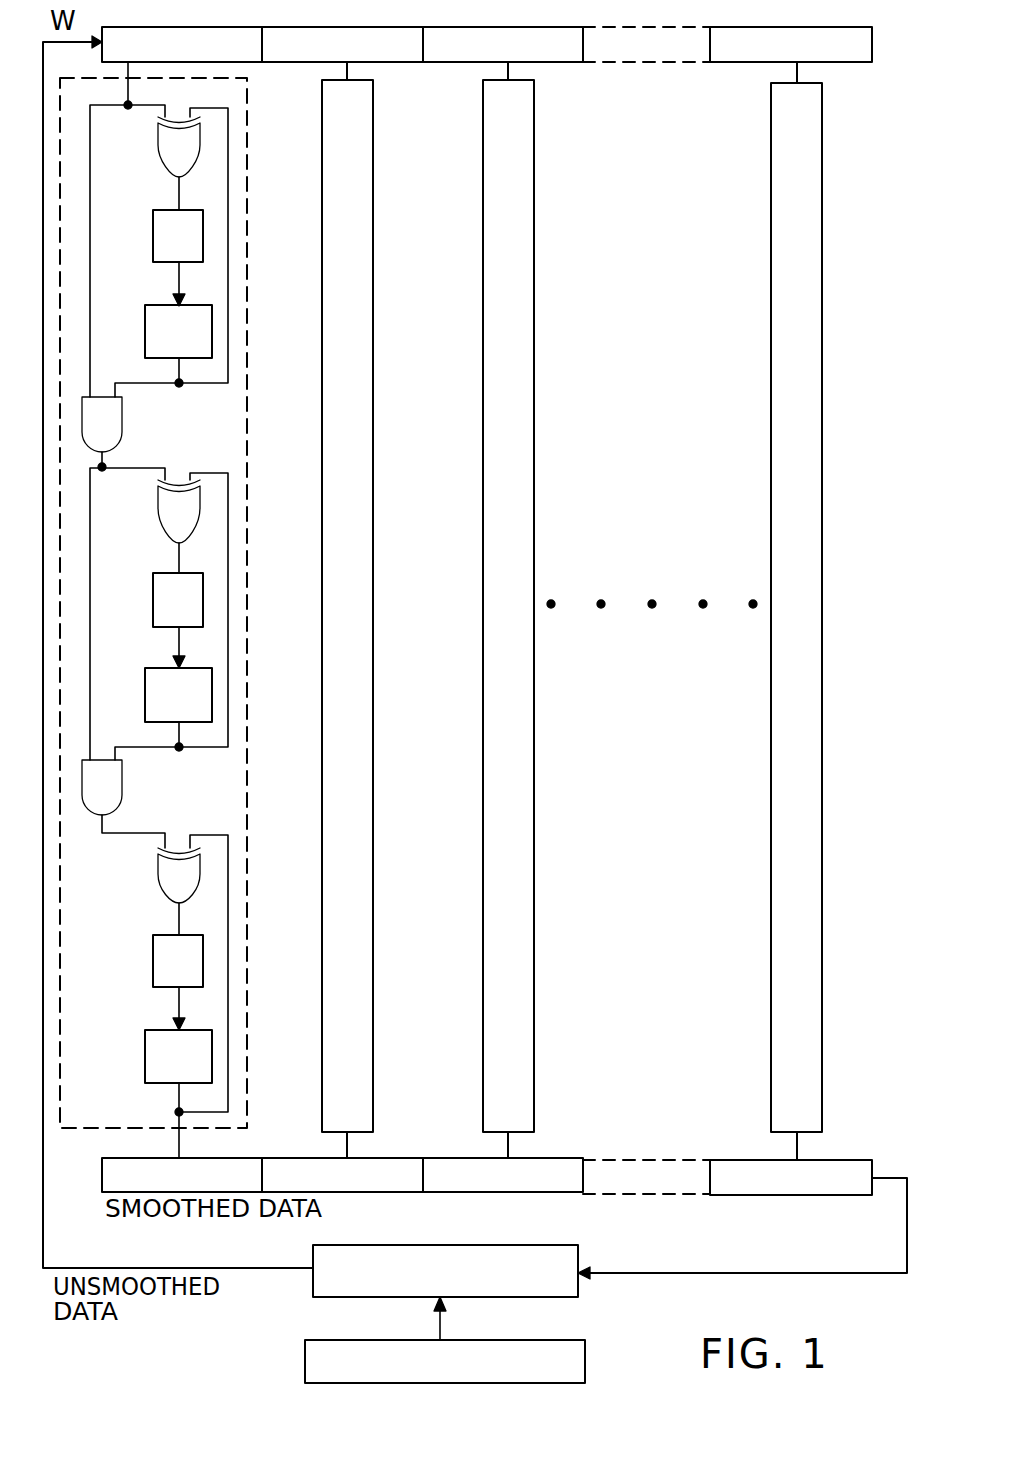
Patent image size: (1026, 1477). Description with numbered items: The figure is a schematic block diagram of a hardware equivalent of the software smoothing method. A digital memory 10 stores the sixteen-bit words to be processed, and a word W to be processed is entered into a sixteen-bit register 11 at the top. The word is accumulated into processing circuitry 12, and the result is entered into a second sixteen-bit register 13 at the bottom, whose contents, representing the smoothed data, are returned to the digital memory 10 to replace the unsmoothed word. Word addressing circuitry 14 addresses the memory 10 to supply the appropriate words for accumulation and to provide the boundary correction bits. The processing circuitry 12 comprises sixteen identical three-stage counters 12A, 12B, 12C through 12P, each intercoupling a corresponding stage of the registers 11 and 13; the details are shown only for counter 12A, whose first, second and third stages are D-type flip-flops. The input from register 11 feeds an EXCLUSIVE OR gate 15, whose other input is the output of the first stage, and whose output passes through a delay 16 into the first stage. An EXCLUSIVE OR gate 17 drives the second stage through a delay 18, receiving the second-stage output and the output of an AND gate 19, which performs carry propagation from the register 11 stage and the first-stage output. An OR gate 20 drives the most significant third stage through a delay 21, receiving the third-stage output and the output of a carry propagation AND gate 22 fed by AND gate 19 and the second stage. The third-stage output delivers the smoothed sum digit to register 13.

The digital memory 10 is at (578, 1250).
The 16 bit register 11 is at (728, 88).
The processing circuitry 12 is at (663, 533).
The three-stage counter 12A is at (242, 792).
The three-stage counter 12B is at (362, 792).
The three-stage counter 12C is at (531, 791).
The three-stage counter 12P is at (820, 795).
The 16 bit register 13 is at (737, 1132).
The word addressing circuitry 14 is at (585, 1340).
The EXCLUSIVE OR gate 15 is at (163, 149).
The delay 16 is at (160, 236).
The EXCLUSIVE OR gate 17 is at (163, 513).
The delay 18 is at (160, 595).
The AND gate 19 is at (118, 420).
The OR gate 20 is at (163, 872).
The delay 21 is at (153, 960).
The carry propagation AND gate 22 is at (120, 782).